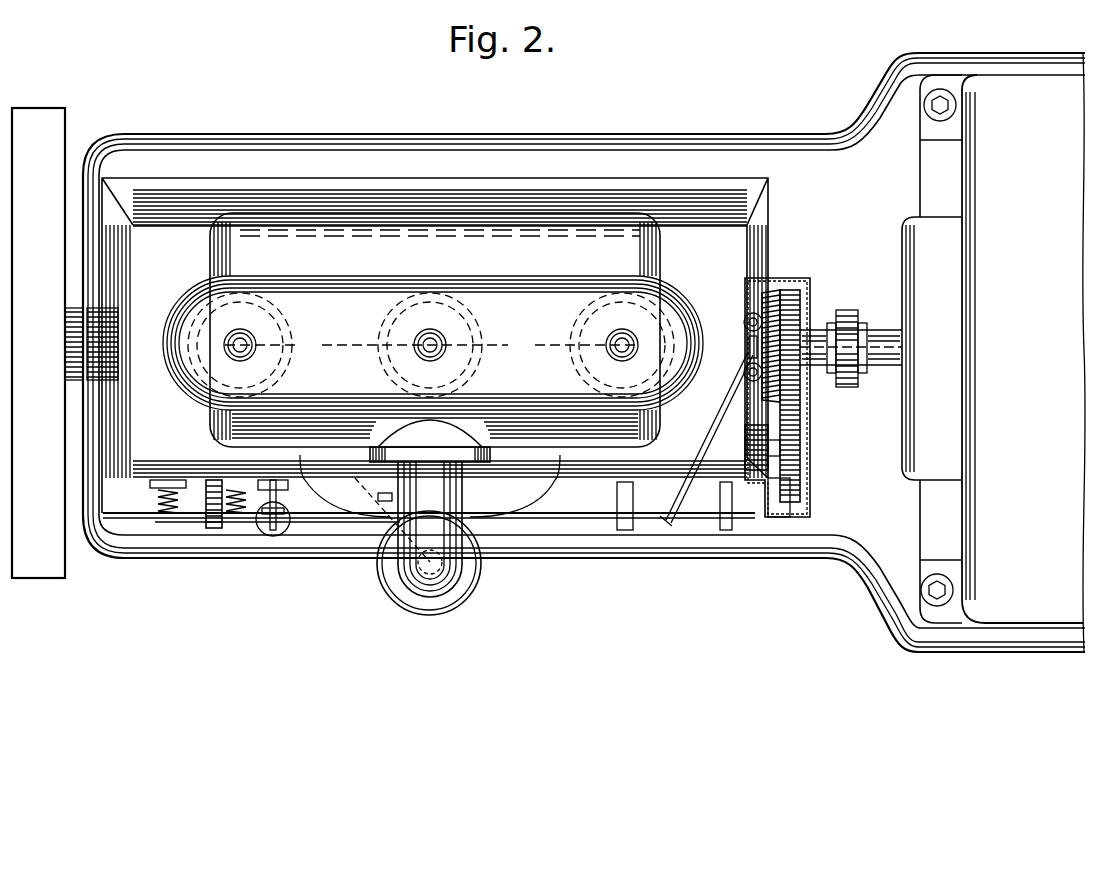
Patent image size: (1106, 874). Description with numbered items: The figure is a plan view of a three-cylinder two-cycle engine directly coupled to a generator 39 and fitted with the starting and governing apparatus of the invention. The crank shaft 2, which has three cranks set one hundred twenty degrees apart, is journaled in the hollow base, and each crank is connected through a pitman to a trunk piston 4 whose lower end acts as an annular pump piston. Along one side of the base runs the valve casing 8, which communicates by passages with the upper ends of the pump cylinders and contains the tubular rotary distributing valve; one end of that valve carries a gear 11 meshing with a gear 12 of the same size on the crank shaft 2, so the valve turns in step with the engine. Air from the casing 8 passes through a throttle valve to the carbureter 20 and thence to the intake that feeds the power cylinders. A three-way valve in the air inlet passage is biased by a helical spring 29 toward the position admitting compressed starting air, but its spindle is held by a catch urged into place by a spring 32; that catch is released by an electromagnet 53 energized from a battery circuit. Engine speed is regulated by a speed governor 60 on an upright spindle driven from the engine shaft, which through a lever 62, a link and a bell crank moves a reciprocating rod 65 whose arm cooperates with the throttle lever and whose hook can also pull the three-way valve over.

The crank shaft 2 is at (812, 338).
The trunk piston 4 is at (433, 343).
The valve casing 8 is at (435, 345).
The gear 11 is at (800, 461).
The gear 12 is at (792, 290).
The carbureter 20 is at (462, 585).
The helical spring 29 is at (185, 514).
The spring 32 is at (244, 512).
The generator 39 is at (992, 349).
The electromagnet 53 is at (276, 536).
The speed governor 60 is at (749, 348).
The lever 62 is at (718, 438).
The reciprocating rod 65 is at (596, 520).